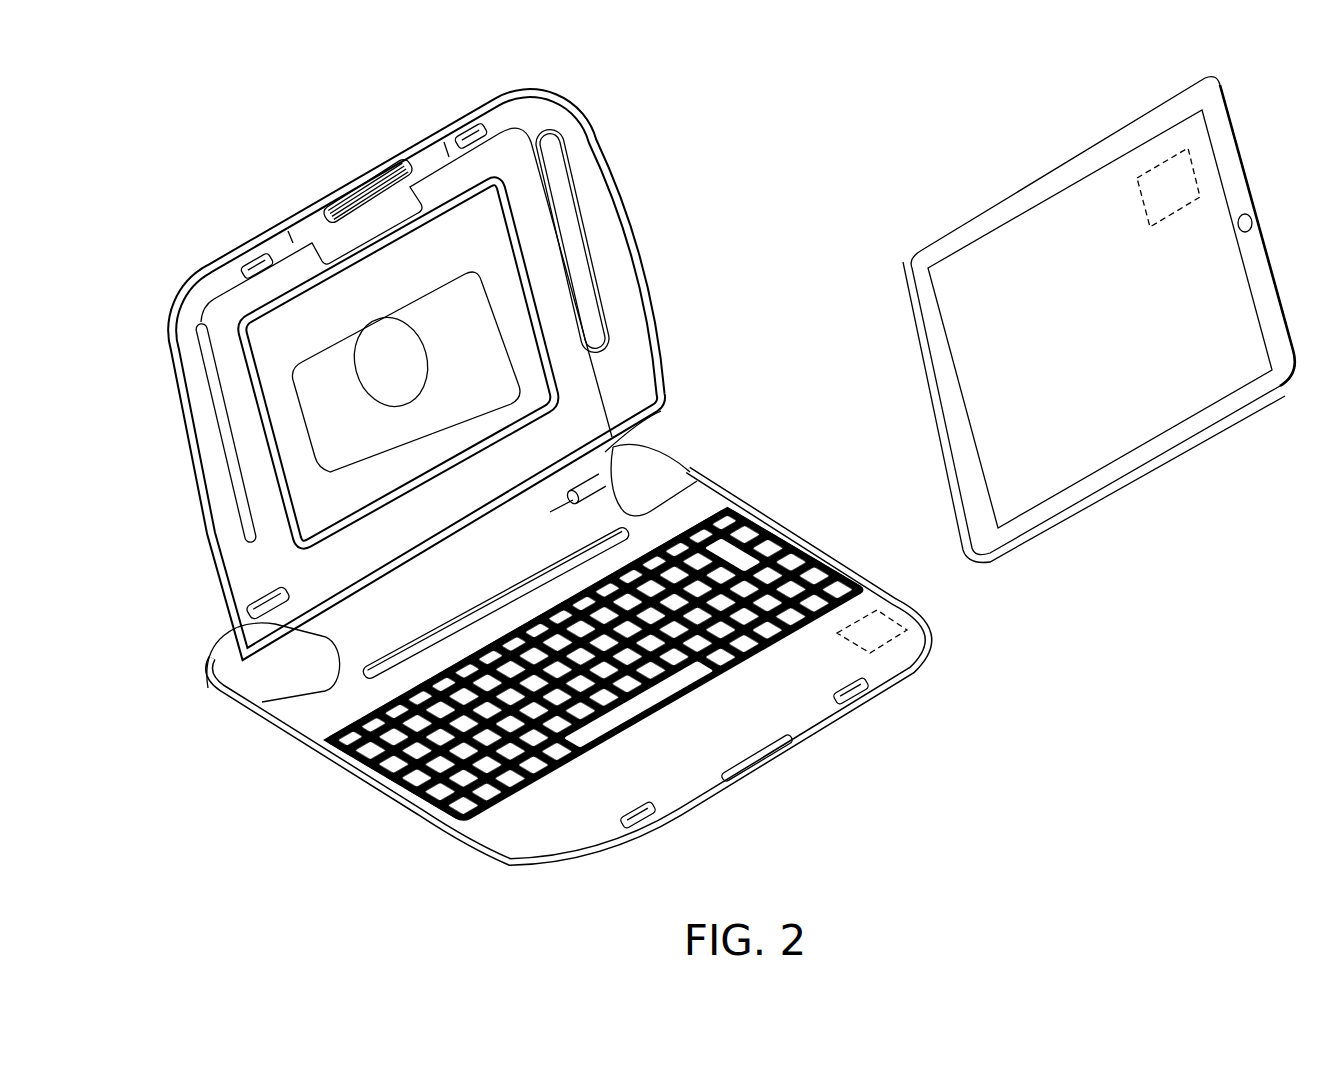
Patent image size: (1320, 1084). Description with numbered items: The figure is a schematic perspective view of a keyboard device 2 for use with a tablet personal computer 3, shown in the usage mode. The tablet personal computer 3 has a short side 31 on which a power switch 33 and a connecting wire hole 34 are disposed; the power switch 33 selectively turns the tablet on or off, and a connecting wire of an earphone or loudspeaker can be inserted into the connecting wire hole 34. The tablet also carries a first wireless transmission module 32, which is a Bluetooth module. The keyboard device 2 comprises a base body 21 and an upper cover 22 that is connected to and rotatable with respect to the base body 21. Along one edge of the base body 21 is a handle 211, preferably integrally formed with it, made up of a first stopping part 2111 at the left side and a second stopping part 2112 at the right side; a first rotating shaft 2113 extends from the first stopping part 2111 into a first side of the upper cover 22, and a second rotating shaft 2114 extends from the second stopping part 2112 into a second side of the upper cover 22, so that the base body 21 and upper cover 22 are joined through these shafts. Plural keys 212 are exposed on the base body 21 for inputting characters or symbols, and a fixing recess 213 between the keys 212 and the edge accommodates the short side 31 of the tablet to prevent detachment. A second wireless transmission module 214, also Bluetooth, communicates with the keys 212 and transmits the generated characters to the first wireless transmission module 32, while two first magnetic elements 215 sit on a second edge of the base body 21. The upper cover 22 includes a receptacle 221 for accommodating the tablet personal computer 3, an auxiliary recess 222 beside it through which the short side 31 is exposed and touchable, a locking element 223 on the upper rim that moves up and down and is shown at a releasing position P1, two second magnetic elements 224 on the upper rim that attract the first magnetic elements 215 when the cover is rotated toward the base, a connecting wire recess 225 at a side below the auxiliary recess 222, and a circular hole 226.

The keyboard device 2 is at (713, 113).
The base body 21 is at (535, 843).
The handle 211 is at (456, 586).
The first stopping part 2111 is at (264, 678).
The second stopping part 2112 is at (637, 462).
The first rotating shaft 2113 is at (324, 700).
The second rotating shaft 2114 is at (622, 447).
The plural keys 212 is at (768, 576).
The fixing recess 213 is at (400, 660).
The second wireless transmission module 214 is at (880, 635).
The first magnetic elements 215 is at (646, 822).
The upper cover 22 is at (620, 305).
The receptacle 221 is at (523, 198).
The auxiliary recess 222 is at (563, 222).
The locking element 223 is at (423, 160).
The second magnetic elements 224 is at (462, 128).
The connecting wire recess 225 is at (258, 591).
The circular hole 226 is at (382, 388).
The releasing position P1 is at (200, 303).
The tablet personal computer 3 is at (1074, 320).
The short side 31 is at (940, 405).
The first wireless transmission module 32 is at (1163, 177).
The power switch 33 is at (908, 303).
The connecting wire hole 34 is at (968, 538).